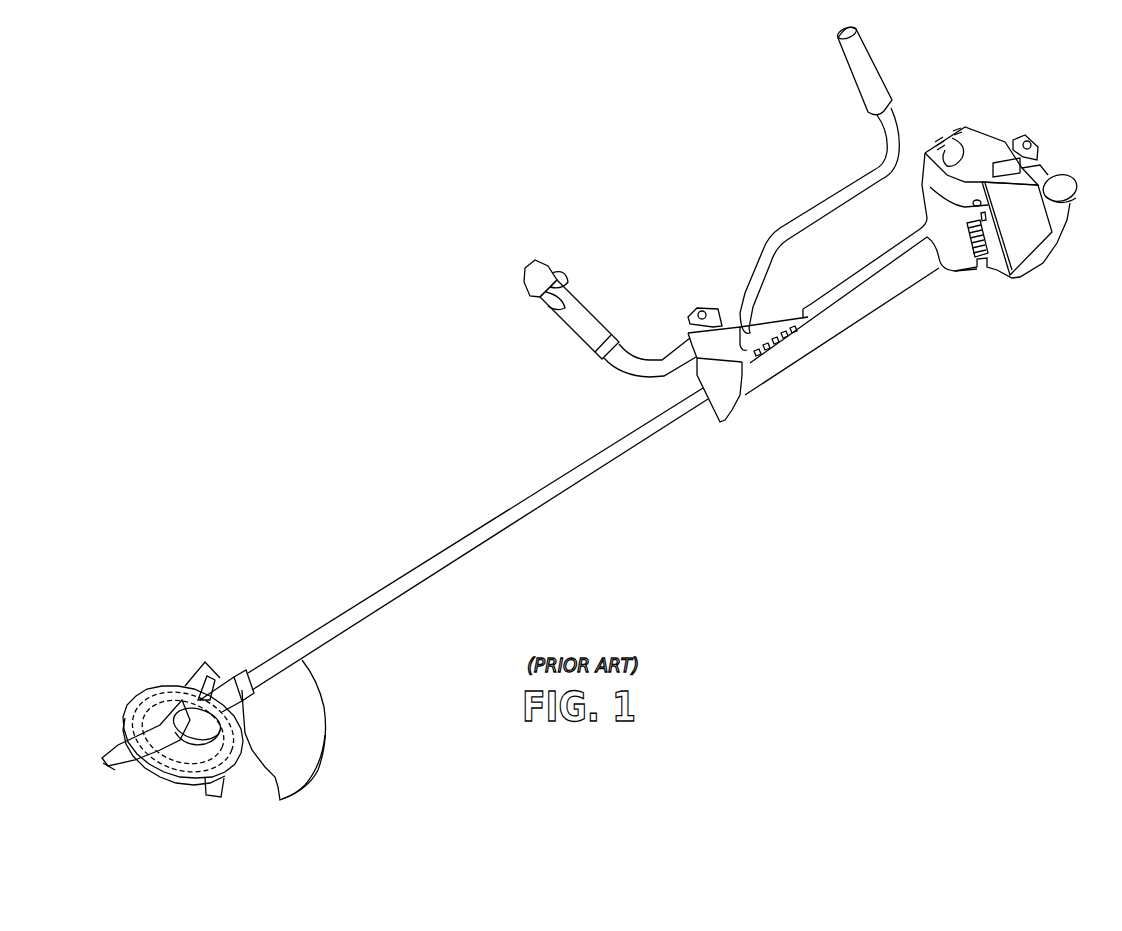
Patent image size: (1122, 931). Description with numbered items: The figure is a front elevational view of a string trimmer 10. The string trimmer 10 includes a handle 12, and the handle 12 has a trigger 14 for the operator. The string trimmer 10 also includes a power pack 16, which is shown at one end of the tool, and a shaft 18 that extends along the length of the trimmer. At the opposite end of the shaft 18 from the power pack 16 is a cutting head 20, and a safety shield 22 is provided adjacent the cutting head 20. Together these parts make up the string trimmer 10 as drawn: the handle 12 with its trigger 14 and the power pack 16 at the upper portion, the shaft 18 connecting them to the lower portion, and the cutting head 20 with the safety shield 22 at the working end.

The string trimmer 10 is at (478, 168).
The handle 12 is at (590, 312).
The trigger 14 is at (567, 292).
The power pack 16 is at (1030, 212).
The shaft 18 is at (538, 504).
The cutting head 20 is at (162, 707).
The safety shield 22 is at (297, 713).